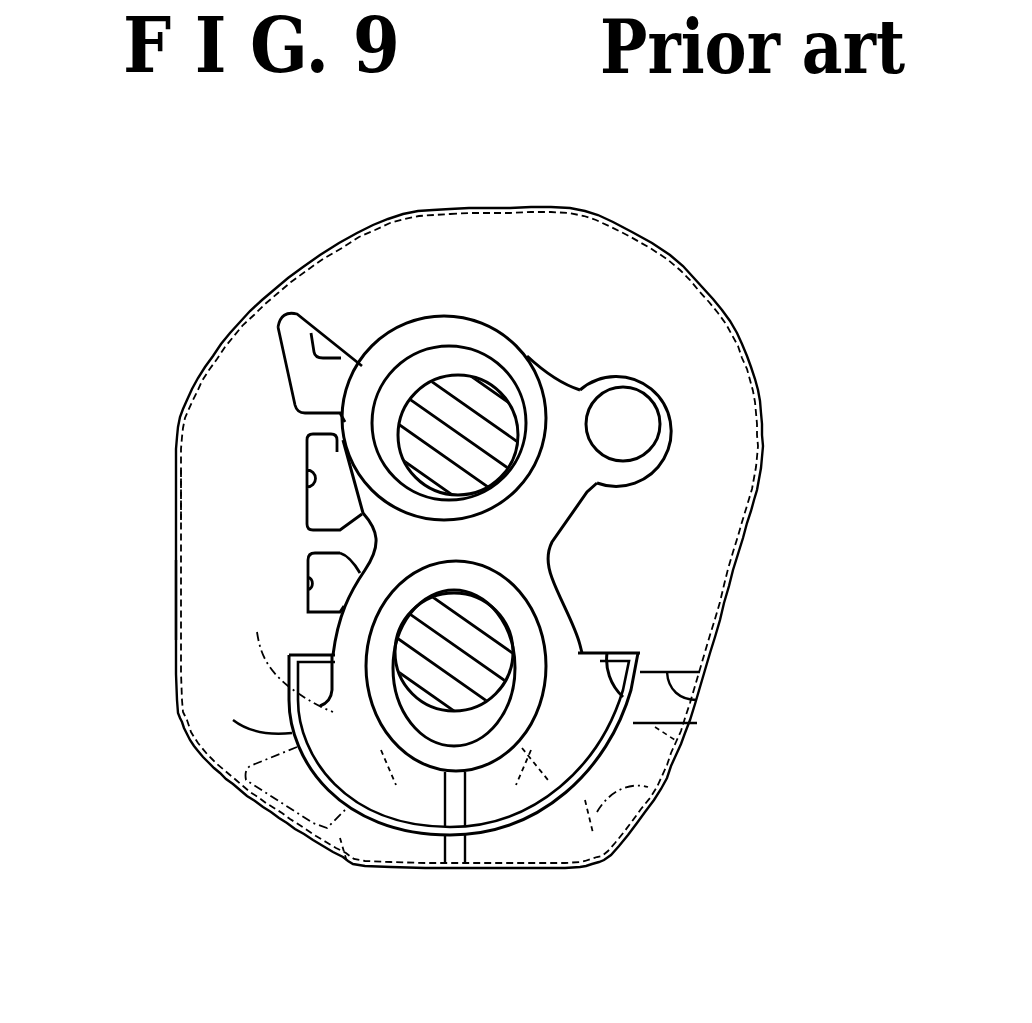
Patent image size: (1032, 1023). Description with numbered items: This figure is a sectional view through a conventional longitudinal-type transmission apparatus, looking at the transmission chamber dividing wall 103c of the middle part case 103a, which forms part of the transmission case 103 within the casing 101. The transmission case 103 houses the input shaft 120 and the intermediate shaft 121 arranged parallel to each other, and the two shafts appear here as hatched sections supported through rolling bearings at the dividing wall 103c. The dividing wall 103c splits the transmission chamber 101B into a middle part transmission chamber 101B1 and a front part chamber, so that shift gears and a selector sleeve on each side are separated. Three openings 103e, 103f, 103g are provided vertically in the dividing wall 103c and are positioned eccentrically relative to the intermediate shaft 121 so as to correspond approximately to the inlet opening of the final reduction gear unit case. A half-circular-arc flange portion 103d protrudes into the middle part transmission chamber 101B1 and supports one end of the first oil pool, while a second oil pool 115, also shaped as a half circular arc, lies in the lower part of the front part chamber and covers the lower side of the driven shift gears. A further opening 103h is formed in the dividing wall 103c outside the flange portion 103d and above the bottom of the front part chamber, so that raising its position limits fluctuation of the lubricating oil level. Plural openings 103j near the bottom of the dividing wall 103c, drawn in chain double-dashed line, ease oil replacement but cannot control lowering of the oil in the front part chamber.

The casing 101 is at (472, 537).
The transmission chamber 101B is at (686, 325).
The middle part transmission chamber 101B1 is at (720, 376).
The transmission case 103 is at (740, 575).
The middle part case 103a is at (178, 607).
The transmission chamber dividing wall 103c is at (210, 495).
The flange portion 103d is at (293, 693).
The opening 103e is at (313, 345).
The opening 103f is at (313, 466).
The opening 103g is at (310, 567).
The opening 103h is at (695, 705).
The plural openings 103j is at (693, 802).
The second oil pool 115 is at (604, 653).
The input shaft 120 is at (488, 403).
The intermediate shaft 121 is at (470, 622).